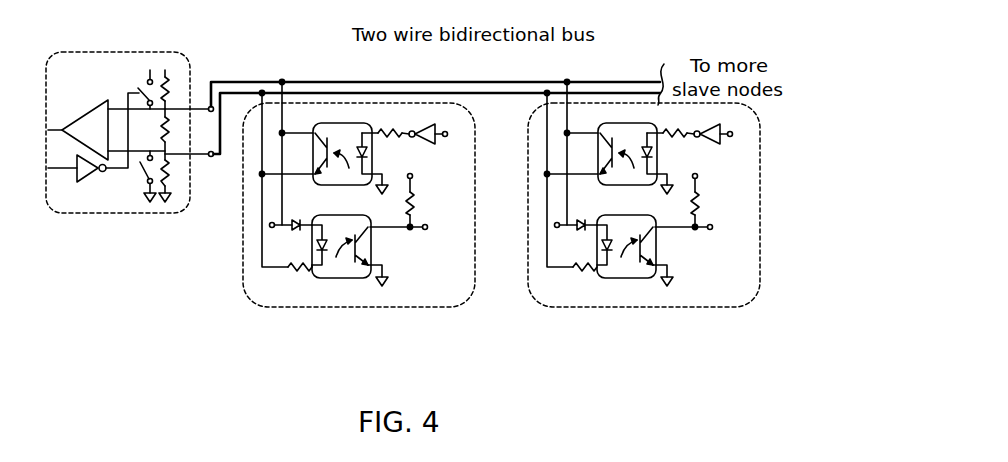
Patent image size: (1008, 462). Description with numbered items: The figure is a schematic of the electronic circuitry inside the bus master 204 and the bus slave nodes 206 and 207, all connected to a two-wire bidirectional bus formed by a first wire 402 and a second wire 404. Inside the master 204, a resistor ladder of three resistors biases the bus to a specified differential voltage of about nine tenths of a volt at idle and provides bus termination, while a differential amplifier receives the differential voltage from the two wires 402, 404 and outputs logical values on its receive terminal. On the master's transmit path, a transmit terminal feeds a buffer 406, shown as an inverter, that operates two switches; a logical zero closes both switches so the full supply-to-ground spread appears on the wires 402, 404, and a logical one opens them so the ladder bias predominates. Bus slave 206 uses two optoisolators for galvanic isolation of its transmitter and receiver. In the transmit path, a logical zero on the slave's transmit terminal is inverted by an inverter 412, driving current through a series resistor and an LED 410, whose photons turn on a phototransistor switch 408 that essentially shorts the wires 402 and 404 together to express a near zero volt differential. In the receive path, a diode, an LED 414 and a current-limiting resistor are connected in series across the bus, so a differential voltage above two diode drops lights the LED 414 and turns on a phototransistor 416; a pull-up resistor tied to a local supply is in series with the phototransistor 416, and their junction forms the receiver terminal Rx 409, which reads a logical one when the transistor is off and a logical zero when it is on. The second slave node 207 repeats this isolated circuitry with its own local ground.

The bus master 204 is at (139, 159).
The bus slave node 206 is at (379, 207).
The second slave node 207 is at (557, 309).
The first wire 402 is at (225, 80).
The second wire 404 is at (212, 158).
The buffer 406 is at (80, 180).
The phototransistor switch 408 is at (317, 127).
The receiver terminal Rx 409 is at (432, 213).
The LED 410 is at (362, 175).
The inverter 412 is at (425, 125).
The LED 414 is at (325, 264).
The phototransistor 416 is at (370, 233).